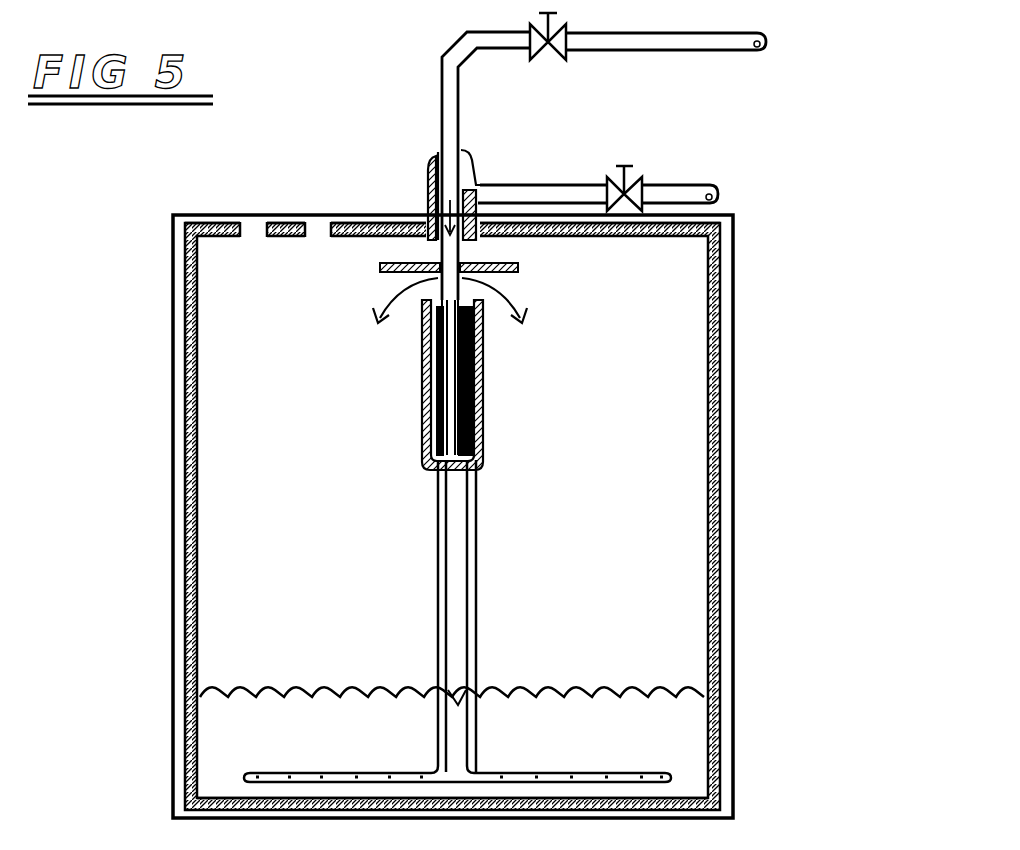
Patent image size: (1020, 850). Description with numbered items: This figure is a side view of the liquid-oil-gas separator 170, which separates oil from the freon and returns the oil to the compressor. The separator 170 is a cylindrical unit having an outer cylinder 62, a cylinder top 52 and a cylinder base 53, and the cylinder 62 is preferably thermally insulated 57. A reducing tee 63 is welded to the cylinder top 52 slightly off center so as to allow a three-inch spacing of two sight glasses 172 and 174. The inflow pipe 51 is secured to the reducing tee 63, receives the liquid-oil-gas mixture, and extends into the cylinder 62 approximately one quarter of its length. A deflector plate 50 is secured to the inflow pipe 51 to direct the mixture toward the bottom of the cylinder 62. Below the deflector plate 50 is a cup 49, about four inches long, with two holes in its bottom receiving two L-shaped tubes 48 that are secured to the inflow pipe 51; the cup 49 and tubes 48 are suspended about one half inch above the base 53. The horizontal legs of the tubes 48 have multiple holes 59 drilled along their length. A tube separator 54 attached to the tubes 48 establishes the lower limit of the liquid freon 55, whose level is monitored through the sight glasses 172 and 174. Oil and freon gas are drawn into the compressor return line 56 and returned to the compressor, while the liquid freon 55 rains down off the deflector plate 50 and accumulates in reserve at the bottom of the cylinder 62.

The separator 170 is at (742, 348).
The sight glass 172 is at (252, 221).
The sight glass 174 is at (318, 221).
The reducing tee 63 is at (434, 194).
The inflow pipe 51 is at (596, 52).
The compressor return line 56 is at (688, 184).
The cylinder top 52 is at (738, 232).
The deflector plate 50 is at (385, 266).
The cup 49 is at (424, 416).
The L-shaped tubes 48 is at (438, 500).
The outer cylinder 62 is at (722, 540).
The thermal insulation 57 is at (184, 666).
The liquid freon 55 is at (458, 702).
The tube separator 54 is at (460, 694).
The holes 59 is at (306, 772).
The cylinder base 53 is at (690, 798).